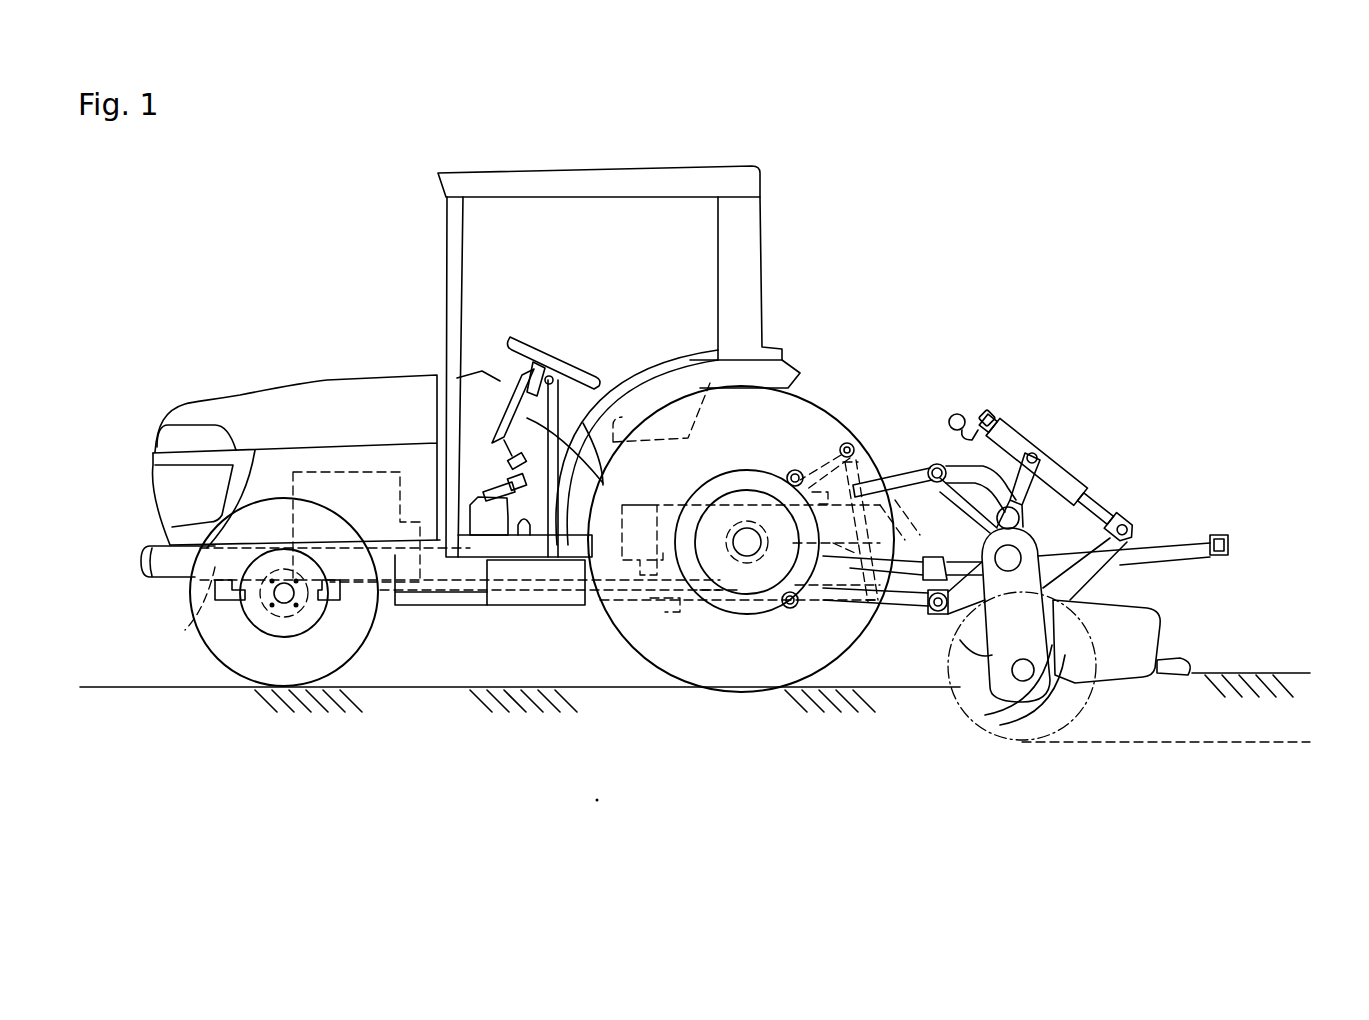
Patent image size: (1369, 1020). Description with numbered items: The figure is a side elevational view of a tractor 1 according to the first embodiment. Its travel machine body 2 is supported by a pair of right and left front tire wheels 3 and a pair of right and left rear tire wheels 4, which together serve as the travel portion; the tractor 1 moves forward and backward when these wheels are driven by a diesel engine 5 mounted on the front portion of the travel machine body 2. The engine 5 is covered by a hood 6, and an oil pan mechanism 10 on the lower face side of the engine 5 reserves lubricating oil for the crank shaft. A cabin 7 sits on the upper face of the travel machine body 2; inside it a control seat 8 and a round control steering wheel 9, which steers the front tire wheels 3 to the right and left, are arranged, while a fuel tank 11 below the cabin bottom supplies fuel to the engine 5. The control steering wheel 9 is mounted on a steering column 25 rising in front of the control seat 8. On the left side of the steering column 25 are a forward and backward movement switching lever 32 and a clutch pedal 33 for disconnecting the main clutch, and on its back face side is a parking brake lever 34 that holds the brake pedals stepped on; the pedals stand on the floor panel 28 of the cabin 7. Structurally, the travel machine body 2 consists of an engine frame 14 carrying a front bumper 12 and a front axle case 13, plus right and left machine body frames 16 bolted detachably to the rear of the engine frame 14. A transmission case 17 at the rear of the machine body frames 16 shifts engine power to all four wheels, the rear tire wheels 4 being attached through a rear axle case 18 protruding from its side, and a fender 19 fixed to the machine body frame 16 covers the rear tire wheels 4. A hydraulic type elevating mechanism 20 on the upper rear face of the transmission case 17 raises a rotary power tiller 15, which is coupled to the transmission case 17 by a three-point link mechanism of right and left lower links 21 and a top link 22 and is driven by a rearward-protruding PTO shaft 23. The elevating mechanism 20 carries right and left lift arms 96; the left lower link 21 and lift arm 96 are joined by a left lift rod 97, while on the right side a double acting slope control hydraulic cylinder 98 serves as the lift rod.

The tractor 1 is at (890, 224).
The travel machine body 2 is at (462, 574).
The front tire wheels 3 is at (243, 648).
The rear tire wheels 4 is at (828, 655).
The diesel engine 5 is at (336, 476).
The hood 6 is at (237, 410).
The cabin 7 is at (612, 190).
The control seat 8 is at (690, 362).
The control steering wheel 9 is at (555, 354).
The oil pan mechanism 10 is at (338, 560).
The fuel tank 11 is at (568, 575).
The front bumper 12 is at (140, 566).
The front axle case 13 is at (290, 618).
The engine frame 14 is at (185, 630).
The rotary power tiller 15 is at (1108, 502).
The machine body frames 16 is at (640, 585).
The transmission case 17 is at (716, 592).
The rear axle case 18 is at (758, 560).
The fender 19 is at (618, 464).
The hydraulic type elevating mechanism 20 is at (725, 472).
The lower links 21 is at (918, 604).
The top link 22 is at (912, 465).
The PTO shaft 23 is at (850, 592).
The steering column 25 is at (603, 485).
The floor panel 28 is at (524, 540).
The forward and backward movement switching lever 32 is at (530, 365).
The clutch pedal 33 is at (502, 485).
The parking brake lever 34 is at (520, 457).
The lift arms 96 is at (805, 460).
The left lift rod 97 is at (900, 540).
The slope control hydraulic cylinder 98 is at (872, 462).